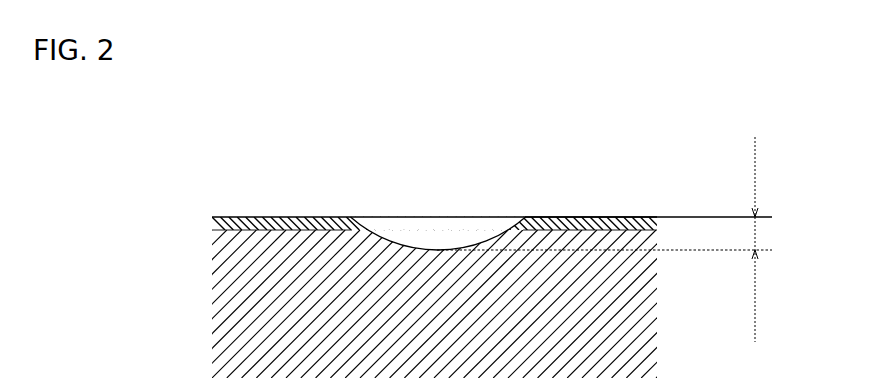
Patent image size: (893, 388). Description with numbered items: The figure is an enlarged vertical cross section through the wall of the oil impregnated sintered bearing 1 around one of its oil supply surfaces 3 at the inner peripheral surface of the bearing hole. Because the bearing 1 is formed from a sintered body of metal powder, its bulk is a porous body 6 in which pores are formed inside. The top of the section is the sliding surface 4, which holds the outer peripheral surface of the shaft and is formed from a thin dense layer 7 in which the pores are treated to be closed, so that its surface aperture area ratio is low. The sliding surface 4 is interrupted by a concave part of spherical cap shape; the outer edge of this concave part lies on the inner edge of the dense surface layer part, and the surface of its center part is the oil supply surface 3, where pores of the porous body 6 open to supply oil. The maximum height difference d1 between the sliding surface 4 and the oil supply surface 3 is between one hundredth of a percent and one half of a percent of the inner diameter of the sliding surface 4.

The oil impregnated sintered bearing 1 is at (225, 212).
The oil supply surfaces 3 is at (457, 248).
The sliding surface 4 is at (293, 217).
The porous body 6 is at (247, 313).
The dense layer 7 is at (600, 217).
The maximum height difference d1 is at (617, 239).